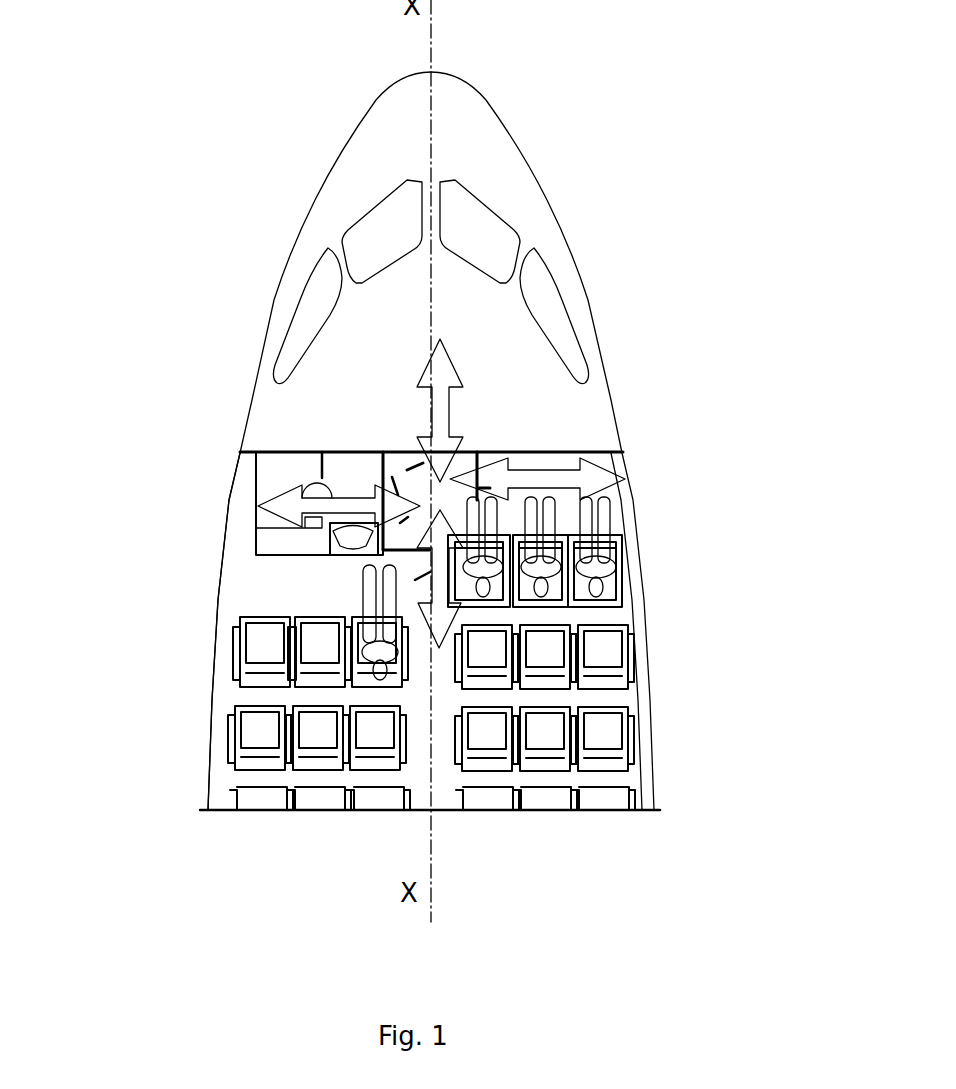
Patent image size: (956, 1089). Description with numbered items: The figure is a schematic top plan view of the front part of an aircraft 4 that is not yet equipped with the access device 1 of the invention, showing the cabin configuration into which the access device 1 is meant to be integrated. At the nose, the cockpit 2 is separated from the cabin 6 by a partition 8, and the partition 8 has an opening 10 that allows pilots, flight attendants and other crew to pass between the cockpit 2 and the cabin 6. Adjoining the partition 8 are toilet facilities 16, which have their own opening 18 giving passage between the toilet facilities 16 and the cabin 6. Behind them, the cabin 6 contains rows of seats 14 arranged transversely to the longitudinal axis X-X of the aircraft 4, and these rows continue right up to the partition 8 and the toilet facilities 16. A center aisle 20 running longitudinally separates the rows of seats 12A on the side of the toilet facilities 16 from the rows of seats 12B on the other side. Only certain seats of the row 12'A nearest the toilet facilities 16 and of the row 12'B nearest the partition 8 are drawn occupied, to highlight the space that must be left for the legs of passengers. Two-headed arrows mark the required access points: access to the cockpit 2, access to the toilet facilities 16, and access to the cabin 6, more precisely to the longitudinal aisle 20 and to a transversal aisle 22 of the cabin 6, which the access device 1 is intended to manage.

The access device 1 is at (452, 478).
The cockpit 2 is at (515, 385).
The aircraft 4 is at (598, 224).
The cabin 6 is at (240, 572).
The partition 8 is at (604, 452).
The opening 10 is at (423, 463).
The rows of seats 12A is at (375, 762).
The rows of seats 12B is at (607, 800).
The row of seats 12'A is at (219, 644).
The row of seats 12'B is at (623, 552).
The seats 14 is at (375, 733).
The toilet facilities 16 is at (273, 468).
The opening 18 is at (305, 527).
The center aisle 20 is at (448, 782).
The transversal aisle 22 is at (557, 483).